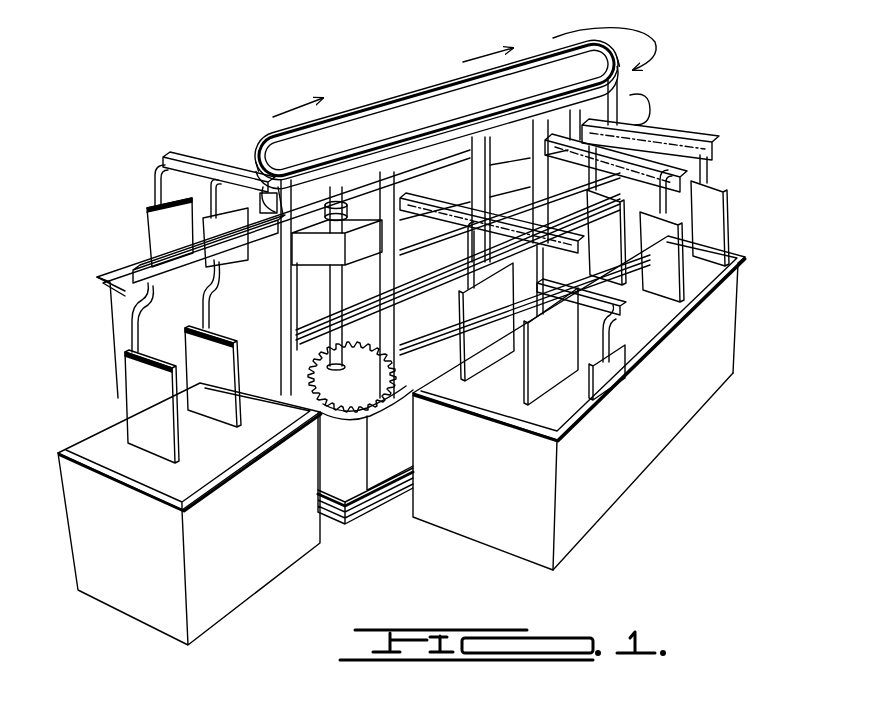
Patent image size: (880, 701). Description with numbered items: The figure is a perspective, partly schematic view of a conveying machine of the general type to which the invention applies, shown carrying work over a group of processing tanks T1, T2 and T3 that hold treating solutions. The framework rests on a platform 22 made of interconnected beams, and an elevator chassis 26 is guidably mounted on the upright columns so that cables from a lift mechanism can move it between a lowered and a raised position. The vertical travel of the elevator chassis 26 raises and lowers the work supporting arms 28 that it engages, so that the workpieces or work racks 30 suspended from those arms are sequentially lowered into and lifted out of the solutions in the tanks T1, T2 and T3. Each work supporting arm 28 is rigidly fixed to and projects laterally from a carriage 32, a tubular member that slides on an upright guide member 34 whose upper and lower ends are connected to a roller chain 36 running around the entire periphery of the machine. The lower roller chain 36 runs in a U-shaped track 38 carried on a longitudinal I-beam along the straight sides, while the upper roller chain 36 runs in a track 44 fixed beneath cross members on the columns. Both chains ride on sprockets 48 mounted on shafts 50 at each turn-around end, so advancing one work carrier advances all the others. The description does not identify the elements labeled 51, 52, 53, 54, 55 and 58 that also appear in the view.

The platform 22 is at (386, 493).
The elevator chassis 26 is at (365, 237).
The work supporting arms 28 is at (163, 160).
The work racks 30 is at (160, 235).
The carriage 32 is at (230, 302).
The upright guide member 34 is at (250, 397).
The roller chain 36 is at (352, 377).
The U-shaped track 38 is at (324, 425).
The track 44 is at (428, 152).
The sprockets 48 is at (352, 312).
The shafts 50 is at (343, 283).
The tank end wall 51 is at (735, 305).
The tank side wall 52 is at (700, 338).
The tank rim 53 is at (645, 393).
The tank front wall 54 is at (582, 490).
The tank wall 55 is at (90, 524).
The guide rail 58 is at (415, 290).
The processing tank T1 is at (605, 403).
The processing tank T2 is at (177, 514).
The processing tank T3 is at (108, 300).